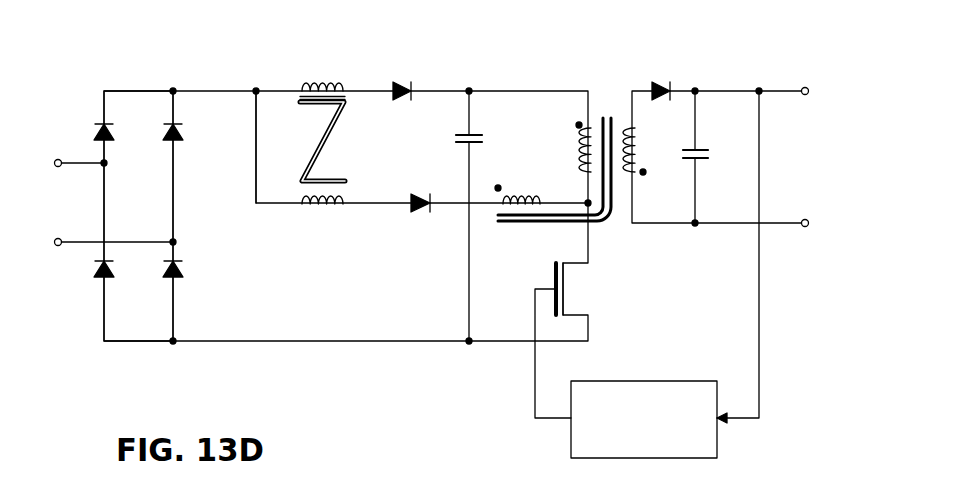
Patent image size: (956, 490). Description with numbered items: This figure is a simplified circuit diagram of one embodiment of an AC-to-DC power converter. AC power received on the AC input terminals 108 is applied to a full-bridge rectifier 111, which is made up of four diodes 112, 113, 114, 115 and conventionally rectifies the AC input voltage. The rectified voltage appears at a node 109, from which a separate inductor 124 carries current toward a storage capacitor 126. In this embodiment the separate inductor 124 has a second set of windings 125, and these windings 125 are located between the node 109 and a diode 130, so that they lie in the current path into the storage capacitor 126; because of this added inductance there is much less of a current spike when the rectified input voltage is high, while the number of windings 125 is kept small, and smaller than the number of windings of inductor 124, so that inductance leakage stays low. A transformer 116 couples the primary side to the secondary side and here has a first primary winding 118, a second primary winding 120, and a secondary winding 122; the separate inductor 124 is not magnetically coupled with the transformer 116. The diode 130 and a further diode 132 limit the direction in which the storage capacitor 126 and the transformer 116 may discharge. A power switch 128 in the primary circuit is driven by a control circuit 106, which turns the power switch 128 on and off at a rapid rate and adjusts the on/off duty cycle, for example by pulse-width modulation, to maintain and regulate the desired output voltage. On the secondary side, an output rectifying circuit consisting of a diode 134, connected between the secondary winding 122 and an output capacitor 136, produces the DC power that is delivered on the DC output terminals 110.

The control circuit 106 is at (680, 380).
The AC input terminals 108 is at (57, 157).
The node 109 is at (256, 88).
The DC output terminals 110 is at (807, 87).
The full-bridge rectifier 111 is at (138, 70).
The diode 112 is at (108, 138).
The diode 113 is at (178, 138).
The diode 114 is at (178, 273).
The diode 115 is at (108, 273).
The transformer 116 is at (610, 88).
The first primary winding 118 is at (578, 137).
The second primary winding 120 is at (513, 197).
The secondary winding 122 is at (637, 143).
The separate inductor 124 is at (327, 208).
The second set of windings 125 is at (322, 77).
The storage capacitor 126 is at (460, 148).
The power switch 128 is at (553, 280).
The diode 130 is at (398, 78).
The diode 132 is at (422, 217).
The diode 134 is at (663, 83).
The output capacitor 136 is at (707, 153).